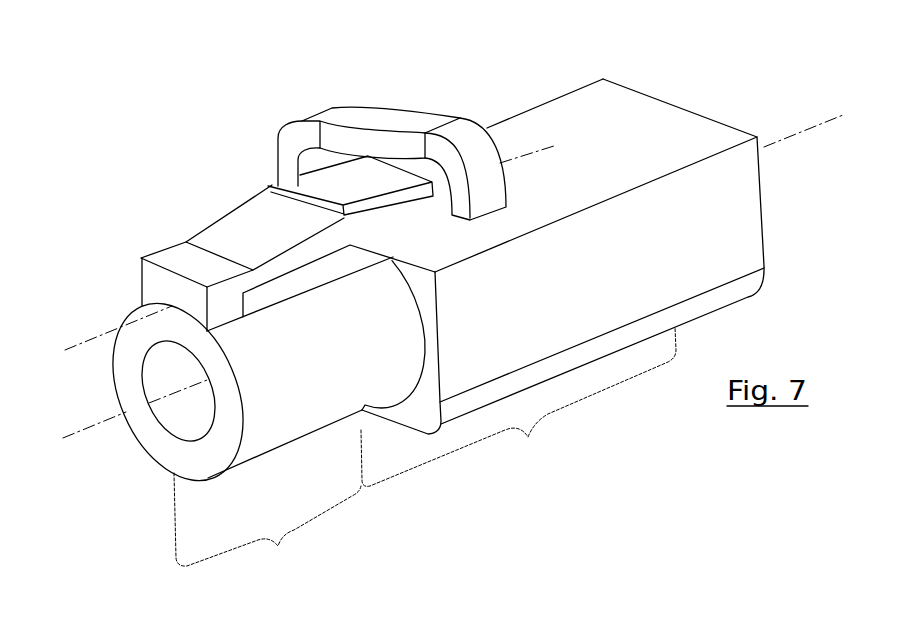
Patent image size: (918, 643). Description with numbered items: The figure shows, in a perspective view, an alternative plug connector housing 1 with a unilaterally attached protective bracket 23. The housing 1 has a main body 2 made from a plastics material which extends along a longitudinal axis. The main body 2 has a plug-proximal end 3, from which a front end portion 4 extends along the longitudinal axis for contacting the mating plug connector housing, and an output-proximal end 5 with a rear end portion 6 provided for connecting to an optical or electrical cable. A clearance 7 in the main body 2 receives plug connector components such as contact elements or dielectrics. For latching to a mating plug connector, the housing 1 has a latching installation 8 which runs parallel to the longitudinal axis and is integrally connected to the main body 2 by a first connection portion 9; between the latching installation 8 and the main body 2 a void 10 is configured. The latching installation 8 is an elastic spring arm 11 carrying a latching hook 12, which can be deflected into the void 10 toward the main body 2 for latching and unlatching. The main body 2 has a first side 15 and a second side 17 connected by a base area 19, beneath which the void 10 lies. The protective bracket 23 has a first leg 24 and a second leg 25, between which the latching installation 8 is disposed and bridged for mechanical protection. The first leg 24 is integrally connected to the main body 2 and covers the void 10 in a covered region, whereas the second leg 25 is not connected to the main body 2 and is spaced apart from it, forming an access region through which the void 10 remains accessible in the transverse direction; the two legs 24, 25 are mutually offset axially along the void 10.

The plug connector housing 1 is at (107, 76).
The main body 2 is at (750, 253).
The plug-proximal end 3 is at (140, 250).
The front end portion 4 is at (256, 421).
The output-proximal end 5 is at (640, 84).
The rear end portion 6 is at (518, 406).
The clearance 7 is at (172, 412).
The latching installation 8 is at (203, 234).
The first connection portion 9 is at (143, 296).
The void 10 is at (400, 244).
The elastic spring arm 11 is at (292, 166).
The latching hook 12 is at (272, 187).
The first side 15 is at (540, 103).
The second side 17 is at (482, 290).
The base area 19 is at (636, 150).
The protective bracket 23 is at (405, 100).
The first leg 24 is at (297, 126).
The second leg 25 is at (497, 189).